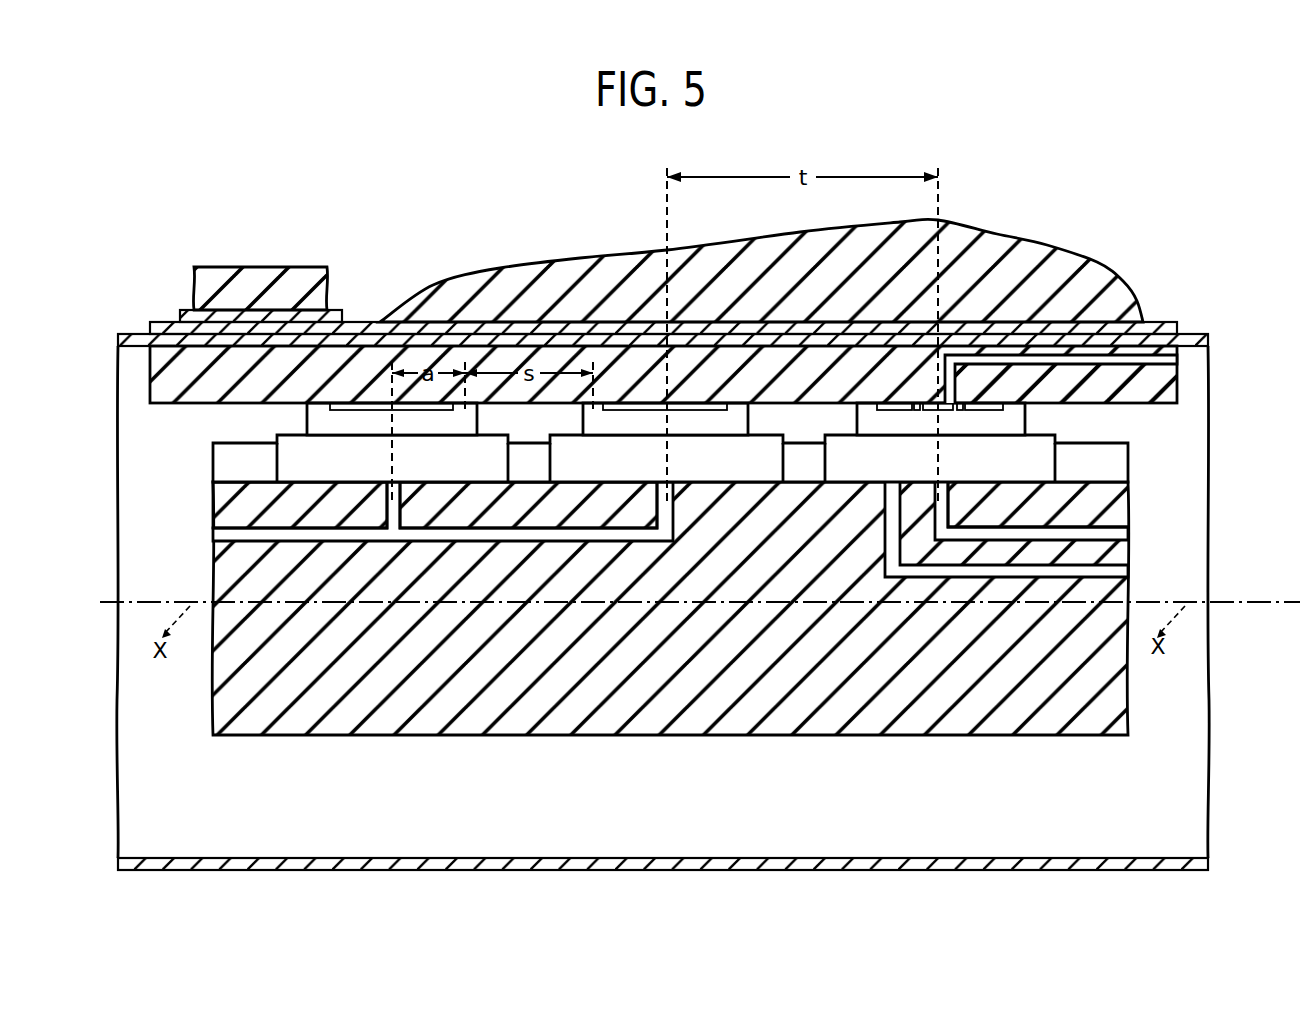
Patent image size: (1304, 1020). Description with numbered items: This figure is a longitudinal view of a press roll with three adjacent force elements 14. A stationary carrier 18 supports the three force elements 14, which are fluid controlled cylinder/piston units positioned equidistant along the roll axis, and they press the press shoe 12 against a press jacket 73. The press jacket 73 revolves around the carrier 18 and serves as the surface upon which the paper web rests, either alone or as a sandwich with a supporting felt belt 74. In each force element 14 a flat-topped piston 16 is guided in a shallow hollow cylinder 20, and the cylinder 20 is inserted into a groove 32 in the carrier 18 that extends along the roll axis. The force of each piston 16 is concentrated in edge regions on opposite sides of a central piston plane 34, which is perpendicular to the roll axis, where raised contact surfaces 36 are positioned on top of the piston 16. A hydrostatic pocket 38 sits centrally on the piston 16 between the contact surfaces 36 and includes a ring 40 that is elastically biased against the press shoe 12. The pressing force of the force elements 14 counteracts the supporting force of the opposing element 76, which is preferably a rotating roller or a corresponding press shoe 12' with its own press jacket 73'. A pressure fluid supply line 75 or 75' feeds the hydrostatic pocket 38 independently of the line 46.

The press shoe 12 is at (663, 391).
The press shoe 12' is at (260, 269).
The force element 14 is at (1013, 396).
The piston 16 is at (1017, 410).
The stationary carrier 18 is at (972, 715).
The hollow cylinder 20 is at (852, 467).
The groove 32 is at (227, 462).
The central piston plane 34 is at (660, 218).
The contact surface 36 is at (866, 403).
The hydrostatic pocket 38 is at (932, 403).
The ring 40 is at (917, 412).
The line 46 is at (257, 530).
The press jacket 73 is at (672, 608).
The press jacket 73' is at (229, 294).
The supporting felt belt 74 is at (358, 326).
The pressure fluid supply line 75 is at (1062, 510).
The pressure fluid supply line 75' is at (1061, 320).
The opposing element 76 is at (563, 273).